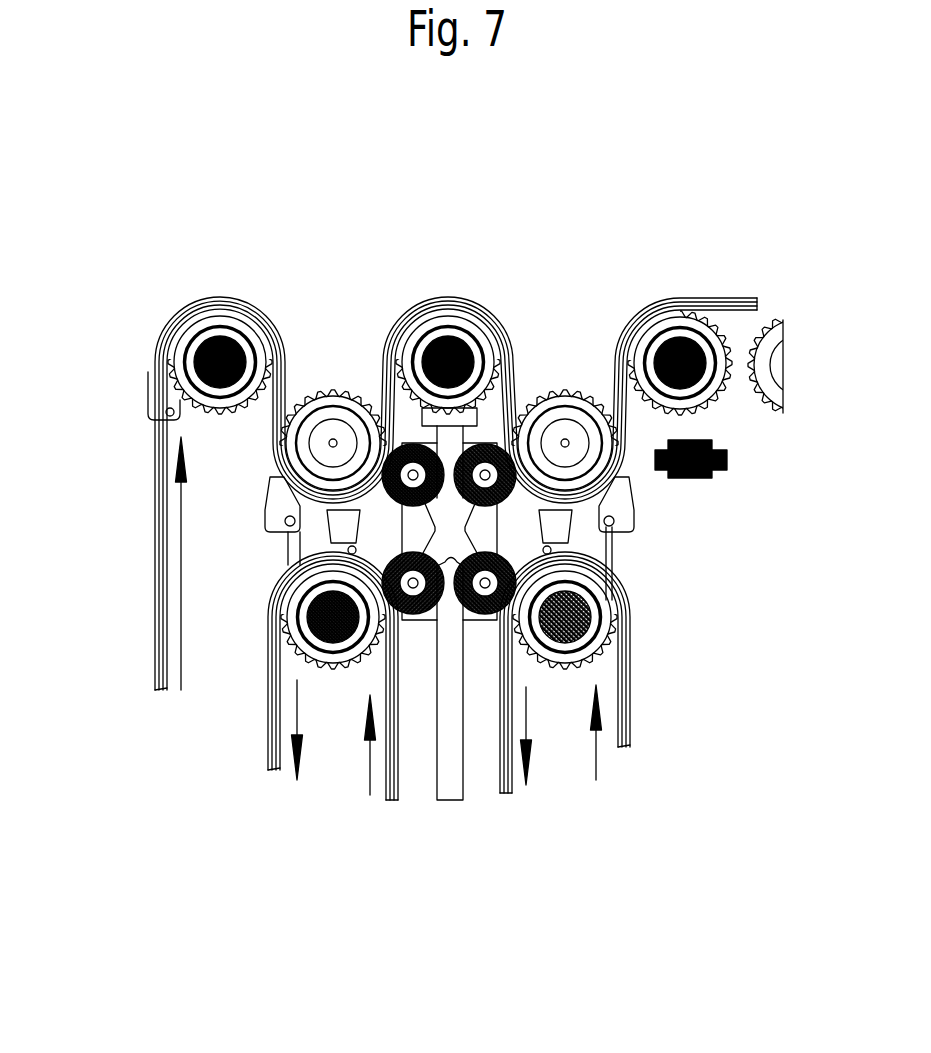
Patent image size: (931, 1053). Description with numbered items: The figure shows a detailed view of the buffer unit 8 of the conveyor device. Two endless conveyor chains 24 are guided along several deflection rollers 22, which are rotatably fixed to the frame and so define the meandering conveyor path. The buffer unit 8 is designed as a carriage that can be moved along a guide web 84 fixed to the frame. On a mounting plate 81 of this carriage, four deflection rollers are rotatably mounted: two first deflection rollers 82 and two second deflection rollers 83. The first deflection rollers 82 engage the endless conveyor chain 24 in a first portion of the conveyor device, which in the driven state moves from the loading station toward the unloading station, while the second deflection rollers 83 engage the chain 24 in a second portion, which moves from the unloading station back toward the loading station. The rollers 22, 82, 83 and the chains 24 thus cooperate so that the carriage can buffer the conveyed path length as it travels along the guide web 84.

The buffer unit 8 is at (612, 548).
The deflection rollers 22 is at (197, 323).
The endless conveyor chains 24 is at (163, 471).
The mounting plate 81 is at (517, 537).
The first deflection rollers 82 is at (330, 400).
The second deflection rollers 83 is at (303, 645).
The guide web 84 is at (446, 777).